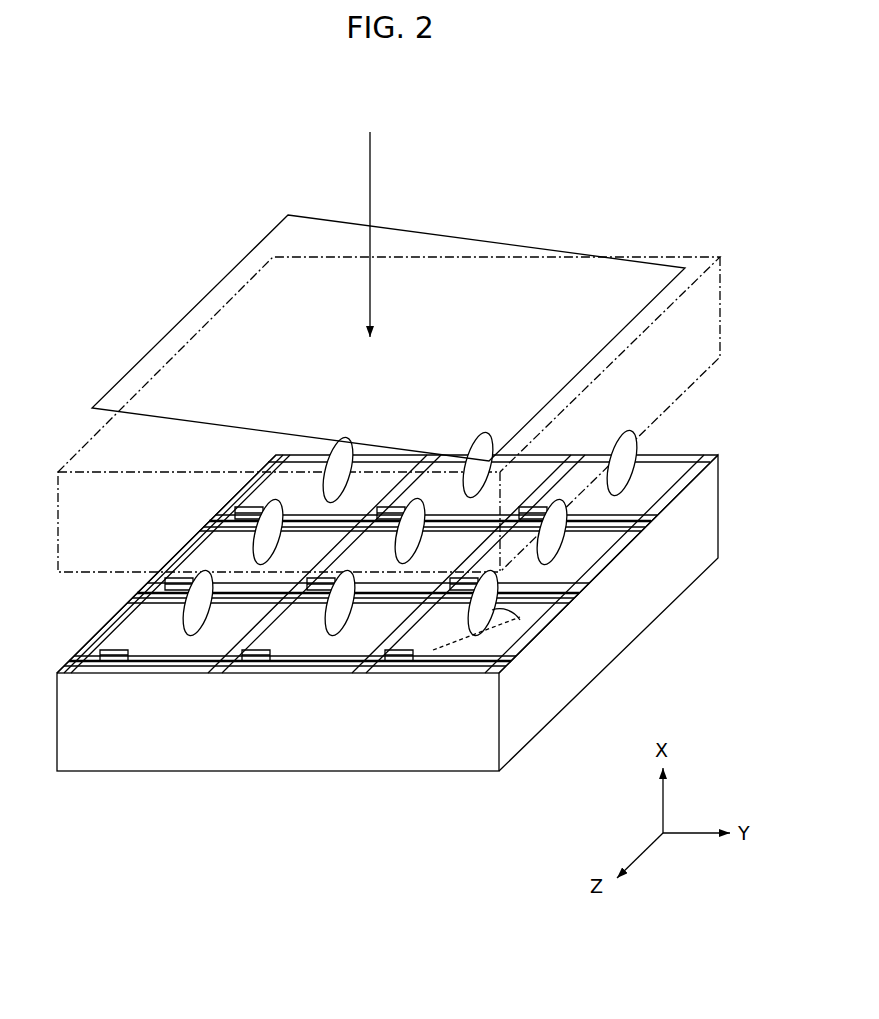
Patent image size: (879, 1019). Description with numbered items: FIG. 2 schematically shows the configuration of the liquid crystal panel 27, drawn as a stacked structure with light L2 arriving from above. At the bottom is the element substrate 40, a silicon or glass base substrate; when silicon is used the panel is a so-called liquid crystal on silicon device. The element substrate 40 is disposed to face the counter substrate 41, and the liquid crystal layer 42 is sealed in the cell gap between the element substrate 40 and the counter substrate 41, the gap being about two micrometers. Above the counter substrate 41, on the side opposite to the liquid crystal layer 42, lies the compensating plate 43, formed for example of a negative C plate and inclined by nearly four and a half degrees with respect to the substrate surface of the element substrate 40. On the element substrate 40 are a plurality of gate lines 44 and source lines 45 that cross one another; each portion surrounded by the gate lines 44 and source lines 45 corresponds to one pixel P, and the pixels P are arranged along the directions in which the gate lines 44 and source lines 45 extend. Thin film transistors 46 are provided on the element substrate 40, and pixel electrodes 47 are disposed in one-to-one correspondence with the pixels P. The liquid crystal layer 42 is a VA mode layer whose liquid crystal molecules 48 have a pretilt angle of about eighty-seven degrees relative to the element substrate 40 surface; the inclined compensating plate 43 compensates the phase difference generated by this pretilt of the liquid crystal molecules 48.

The liquid crystal panel 27 is at (703, 190).
The element substrate 40 is at (55, 673).
The counter substrate 41 is at (55, 472).
The liquid crystal layer 42 is at (363, 643).
The compensating plate 43 is at (147, 372).
The gate lines 44 is at (160, 667).
The source lines 45 is at (230, 641).
The thin film transistors 46 is at (292, 654).
The pixel electrodes 47 is at (333, 652).
The liquid crystal molecule 48 is at (493, 604).
The incident light L2 is at (367, 301).
The pixel P is at (535, 470).